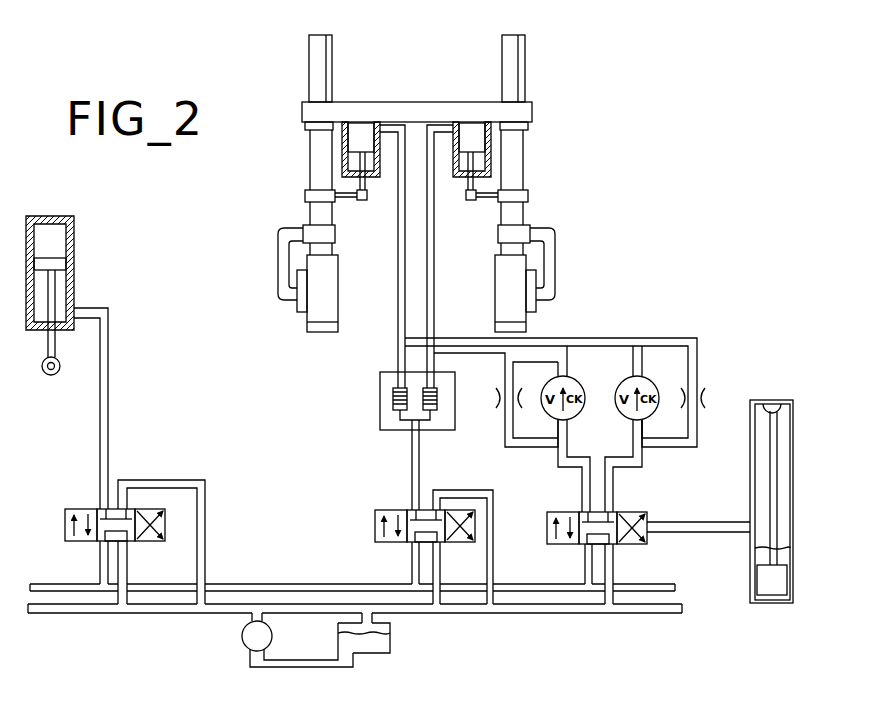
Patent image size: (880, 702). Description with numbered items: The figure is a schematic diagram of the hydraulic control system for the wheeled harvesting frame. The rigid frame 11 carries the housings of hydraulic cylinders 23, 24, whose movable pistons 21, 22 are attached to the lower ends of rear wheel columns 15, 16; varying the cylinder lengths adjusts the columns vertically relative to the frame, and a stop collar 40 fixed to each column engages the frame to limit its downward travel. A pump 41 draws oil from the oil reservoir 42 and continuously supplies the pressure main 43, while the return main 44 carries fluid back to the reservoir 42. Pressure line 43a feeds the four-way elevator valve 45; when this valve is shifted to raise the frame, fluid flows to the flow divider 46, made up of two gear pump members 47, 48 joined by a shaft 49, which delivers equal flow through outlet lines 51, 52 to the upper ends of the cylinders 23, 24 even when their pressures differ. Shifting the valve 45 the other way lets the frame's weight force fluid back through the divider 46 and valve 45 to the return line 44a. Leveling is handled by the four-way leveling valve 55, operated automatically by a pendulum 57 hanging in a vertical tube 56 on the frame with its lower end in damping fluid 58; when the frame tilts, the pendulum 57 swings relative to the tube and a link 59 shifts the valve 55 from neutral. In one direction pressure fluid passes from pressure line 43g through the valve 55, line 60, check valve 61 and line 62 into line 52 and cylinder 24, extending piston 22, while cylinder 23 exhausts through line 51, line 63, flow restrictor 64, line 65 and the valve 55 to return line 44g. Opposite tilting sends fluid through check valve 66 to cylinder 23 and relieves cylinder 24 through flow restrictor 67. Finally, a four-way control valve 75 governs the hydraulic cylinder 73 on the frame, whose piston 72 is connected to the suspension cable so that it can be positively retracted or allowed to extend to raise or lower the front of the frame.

The rigid frame 11 is at (435, 97).
The stop collar 40 is at (305, 127).
The hydraulic cylinder 24 is at (348, 150).
The hydraulic cylinder 23 is at (486, 150).
The rear wheel column 16 is at (318, 185).
The rear wheel column 15 is at (515, 185).
The movable piston 22 is at (367, 199).
The movable piston 21 is at (467, 199).
The outlet line 52 is at (398, 294).
The outlet line 51 is at (434, 301).
The flow divider 46 is at (382, 370).
The gear pump member 48 is at (395, 408).
The gear pump member 47 is at (436, 407).
The shaft 49 is at (420, 430).
The line 62 is at (592, 338).
The line 63 is at (499, 362).
The flow restrictor 64 is at (498, 398).
The flow restrictor 67 is at (707, 400).
The check valve 66 is at (578, 385).
The check valve 61 is at (662, 373).
The line 65 is at (558, 462).
The line 60 is at (640, 456).
The four-way elevator valve 45 is at (392, 506).
The four-way leveling valve 55 is at (561, 510).
The four-way control valve 75 is at (93, 506).
The pressure line 43a is at (412, 568).
The return line 44a is at (440, 571).
The pressure line 43g is at (585, 572).
The return line 44g is at (613, 575).
The pressure main 43 is at (72, 585).
The return main 44 is at (108, 607).
The pump 41 is at (242, 637).
The oil reservoir 42 is at (390, 645).
The hydraulic cylinder 73 is at (72, 262).
The piston 72 is at (58, 358).
The link 59 is at (730, 535).
The vertical tube 56 is at (793, 492).
The pendulum 57 is at (772, 541).
The damping fluid 58 is at (788, 590).